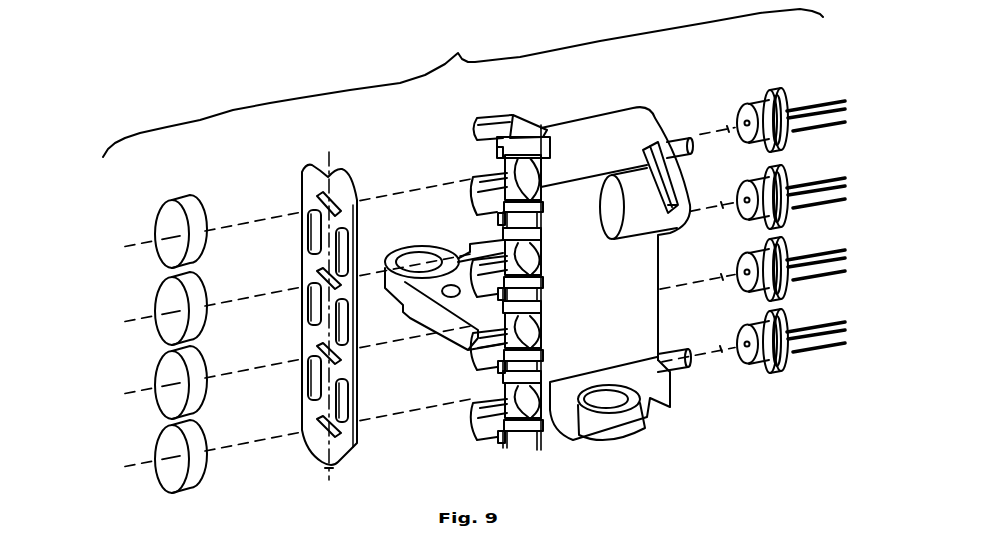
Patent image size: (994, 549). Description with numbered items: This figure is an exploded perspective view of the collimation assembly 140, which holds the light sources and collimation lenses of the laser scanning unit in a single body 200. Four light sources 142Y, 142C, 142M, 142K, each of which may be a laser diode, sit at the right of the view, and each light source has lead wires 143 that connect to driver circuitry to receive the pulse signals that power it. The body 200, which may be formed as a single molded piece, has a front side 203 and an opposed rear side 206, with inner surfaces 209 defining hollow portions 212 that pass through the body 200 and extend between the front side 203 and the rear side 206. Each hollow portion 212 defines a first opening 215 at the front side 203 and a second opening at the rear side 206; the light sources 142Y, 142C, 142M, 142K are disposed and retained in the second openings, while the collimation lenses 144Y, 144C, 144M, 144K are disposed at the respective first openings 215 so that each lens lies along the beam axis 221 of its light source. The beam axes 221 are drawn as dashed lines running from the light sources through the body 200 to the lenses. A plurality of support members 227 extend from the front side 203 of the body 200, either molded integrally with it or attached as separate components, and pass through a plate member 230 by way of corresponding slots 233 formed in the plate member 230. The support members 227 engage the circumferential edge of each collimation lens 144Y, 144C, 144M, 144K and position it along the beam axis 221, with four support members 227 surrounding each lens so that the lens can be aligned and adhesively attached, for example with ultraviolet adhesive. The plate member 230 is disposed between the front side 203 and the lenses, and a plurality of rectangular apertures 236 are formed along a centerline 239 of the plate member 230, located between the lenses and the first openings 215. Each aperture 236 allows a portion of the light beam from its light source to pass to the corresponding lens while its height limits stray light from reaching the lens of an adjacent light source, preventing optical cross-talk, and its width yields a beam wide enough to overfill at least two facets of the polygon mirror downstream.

The collimation assembly 140 is at (450, 40).
The light source 142Y is at (775, 89).
The light source 142C is at (784, 167).
The light source 142M is at (786, 240).
The light source 142K is at (786, 311).
The lead wires 143 is at (845, 100).
The collimation lens 144Y is at (169, 199).
The collimation lens 144C is at (162, 304).
The collimation lens 144M is at (162, 376).
The collimation lens 144K is at (162, 452).
The body 200 is at (593, 117).
The front side 203 is at (542, 280).
The rear side 206 is at (658, 275).
The inner surfaces 209 is at (541, 178).
The hollow portions 212 is at (500, 165).
The first opening 215 is at (543, 184).
The beam axis 221 is at (728, 129).
The support members 227 is at (495, 115).
The plate member 230 is at (300, 176).
The slots 233 is at (310, 234).
The apertures 236 is at (340, 195).
The centerline 239 is at (330, 480).